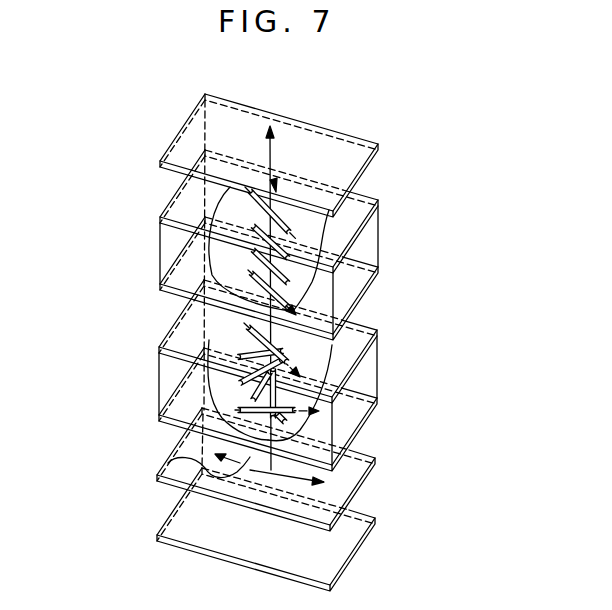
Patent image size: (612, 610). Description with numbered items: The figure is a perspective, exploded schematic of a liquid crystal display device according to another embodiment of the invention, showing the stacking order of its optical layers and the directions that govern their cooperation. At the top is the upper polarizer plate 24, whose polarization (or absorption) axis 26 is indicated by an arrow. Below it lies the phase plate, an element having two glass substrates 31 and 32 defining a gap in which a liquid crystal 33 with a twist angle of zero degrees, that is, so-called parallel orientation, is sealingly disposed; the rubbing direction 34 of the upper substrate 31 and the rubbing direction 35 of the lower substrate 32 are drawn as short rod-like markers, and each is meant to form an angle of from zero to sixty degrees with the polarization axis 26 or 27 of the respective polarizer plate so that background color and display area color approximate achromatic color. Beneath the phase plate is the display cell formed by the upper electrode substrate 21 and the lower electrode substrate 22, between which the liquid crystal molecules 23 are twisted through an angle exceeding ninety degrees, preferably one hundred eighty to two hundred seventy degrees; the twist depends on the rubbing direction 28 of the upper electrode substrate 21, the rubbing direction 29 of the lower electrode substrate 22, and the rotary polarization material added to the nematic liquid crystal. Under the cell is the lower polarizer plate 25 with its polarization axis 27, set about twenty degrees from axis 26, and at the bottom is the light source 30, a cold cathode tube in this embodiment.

The upper electrode substrate 21 is at (381, 327).
The lower electrode substrate 22 is at (357, 437).
The liquid crystal molecules 23 is at (240, 382).
The upper polarizer plate 24 is at (381, 152).
The lower polarizer plate 25 is at (367, 477).
The polarization axis of upper polarizer plate 26 is at (265, 148).
The polarization axis of lower polarizer plate 27 is at (170, 462).
The rubbing direction of upper electrode substrate 28 is at (298, 366).
The rubbing direction of lower electrode substrate 29 is at (318, 411).
The light source 30 is at (357, 547).
The upper glass substrate of phase plate 31 is at (380, 207).
The lower glass substrate of phase plate 32 is at (380, 273).
The liquid crystal of phase plate 33 is at (252, 228).
The rubbing direction of upper substrate of phase plate 34 is at (247, 195).
The rubbing direction of lower substrate of phase plate 35 is at (251, 273).